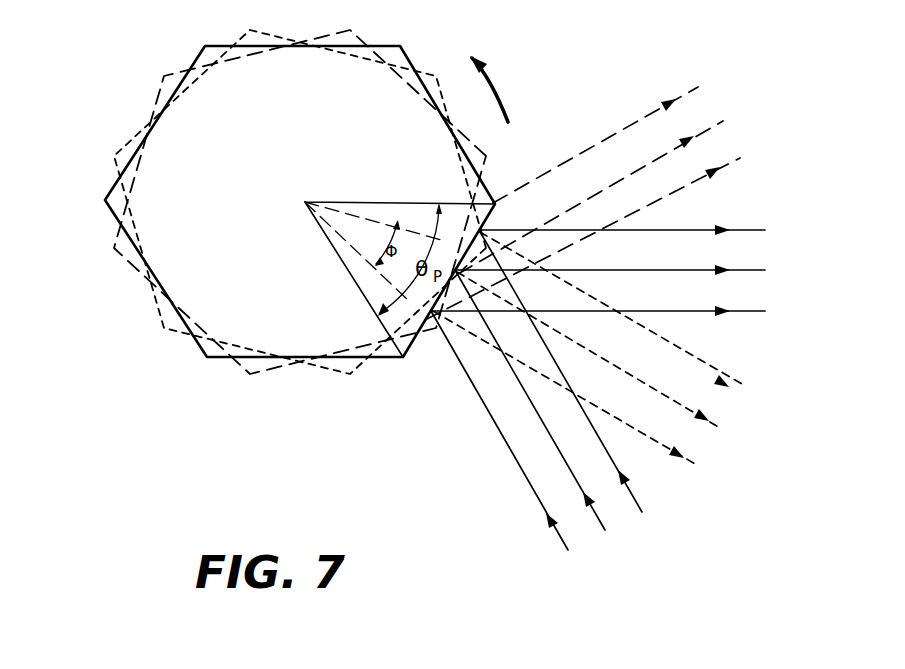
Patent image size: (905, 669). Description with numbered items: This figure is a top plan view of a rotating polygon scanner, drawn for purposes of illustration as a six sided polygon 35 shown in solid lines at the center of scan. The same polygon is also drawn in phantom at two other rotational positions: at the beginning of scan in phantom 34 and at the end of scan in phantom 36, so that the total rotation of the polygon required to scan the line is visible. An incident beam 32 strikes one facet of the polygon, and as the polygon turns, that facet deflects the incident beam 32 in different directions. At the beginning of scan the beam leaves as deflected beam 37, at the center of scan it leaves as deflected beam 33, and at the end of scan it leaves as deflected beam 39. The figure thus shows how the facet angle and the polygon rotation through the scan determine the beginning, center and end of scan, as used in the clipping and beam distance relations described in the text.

The incident beam 32 is at (549, 415).
The deflected beam 33 is at (637, 275).
The polygon at beginning of scan in phantom 34 is at (324, 363).
The six sided polygon 35 is at (125, 318).
The polygon at end of scan in phantom 36 is at (467, 140).
The deflected beam 37 is at (608, 358).
The deflected beam 39 is at (608, 192).